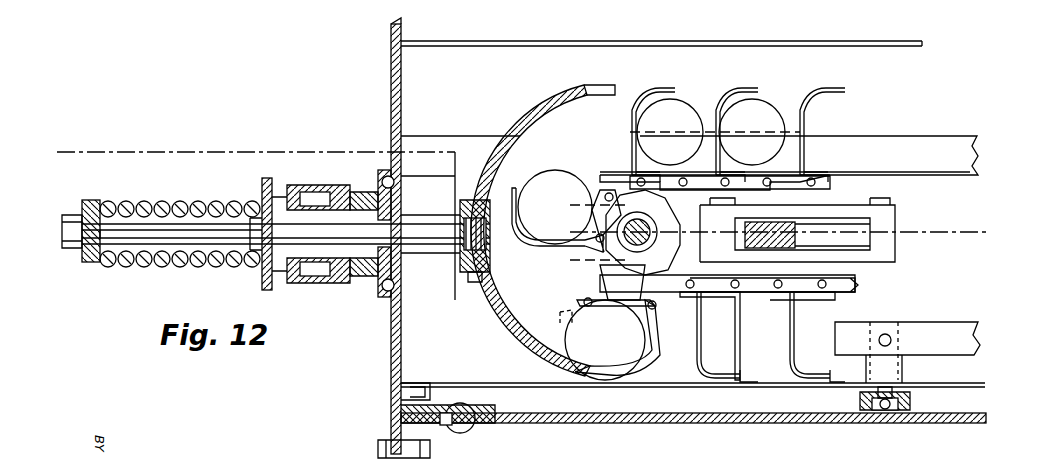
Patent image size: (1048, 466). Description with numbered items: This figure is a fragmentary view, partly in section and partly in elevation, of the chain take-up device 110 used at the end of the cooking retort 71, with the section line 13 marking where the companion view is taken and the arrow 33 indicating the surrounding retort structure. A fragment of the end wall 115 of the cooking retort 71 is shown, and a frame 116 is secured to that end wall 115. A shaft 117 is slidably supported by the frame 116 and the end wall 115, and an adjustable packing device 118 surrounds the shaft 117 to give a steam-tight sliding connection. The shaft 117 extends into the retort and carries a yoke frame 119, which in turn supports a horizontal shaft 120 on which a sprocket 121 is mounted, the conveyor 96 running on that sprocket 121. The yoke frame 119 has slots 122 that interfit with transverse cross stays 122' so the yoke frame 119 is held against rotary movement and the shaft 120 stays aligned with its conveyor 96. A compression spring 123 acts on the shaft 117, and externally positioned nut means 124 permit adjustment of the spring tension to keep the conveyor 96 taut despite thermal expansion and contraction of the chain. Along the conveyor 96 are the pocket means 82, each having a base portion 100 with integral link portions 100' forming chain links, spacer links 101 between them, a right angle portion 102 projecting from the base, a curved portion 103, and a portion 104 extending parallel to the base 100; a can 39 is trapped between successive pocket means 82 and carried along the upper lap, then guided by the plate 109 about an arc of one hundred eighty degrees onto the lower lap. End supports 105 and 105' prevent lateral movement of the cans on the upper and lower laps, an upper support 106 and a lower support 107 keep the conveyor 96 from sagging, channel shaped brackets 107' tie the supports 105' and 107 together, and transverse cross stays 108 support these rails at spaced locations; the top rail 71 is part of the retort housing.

The section line 13- 13 is at (61, 163).
The machine frame 33 is at (356, 75).
The can 39 is at (722, 118).
The cooking retort 71 is at (440, 52).
The pocket means 82 is at (840, 315).
The conveyor 96 is at (870, 293).
The base portion 100 is at (771, 337).
The link portions 100' is at (774, 229).
The spacer links 101 is at (718, 287).
The right angle portion 102 is at (862, 340).
The curved portion 103 is at (866, 370).
The parallel portion 104 is at (806, 379).
The end support 105 is at (789, 139).
The end support 105' is at (907, 325).
The upper support 106 is at (933, 176).
The lower support 107 is at (990, 371).
The channel shaped bracket 107' is at (921, 366).
The transverse cross stay 108 is at (905, 400).
The plate 109 is at (528, 130).
The take-up device 110 is at (230, 145).
The end wall 115 is at (393, 376).
The frame 116 is at (380, 188).
The shaft 117 is at (422, 226).
The adjustable packing device 118 is at (310, 160).
The yoke frame 119 is at (492, 282).
The horizontal shaft 120 is at (652, 236).
The sprocket 121 is at (676, 196).
The slots 122 is at (840, 237).
The transverse cross stays 122' is at (837, 225).
The compression spring 123 is at (162, 200).
The nut means 124 is at (73, 214).